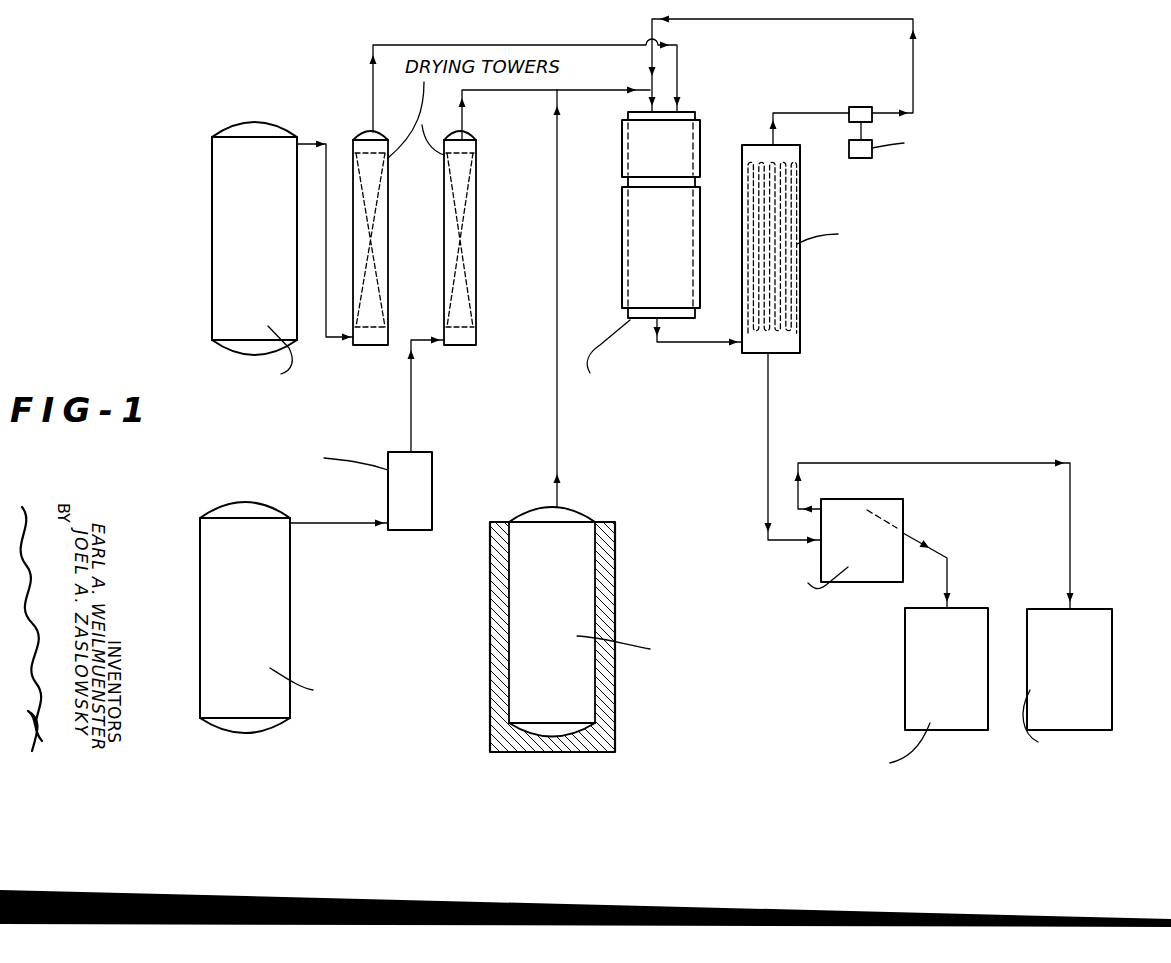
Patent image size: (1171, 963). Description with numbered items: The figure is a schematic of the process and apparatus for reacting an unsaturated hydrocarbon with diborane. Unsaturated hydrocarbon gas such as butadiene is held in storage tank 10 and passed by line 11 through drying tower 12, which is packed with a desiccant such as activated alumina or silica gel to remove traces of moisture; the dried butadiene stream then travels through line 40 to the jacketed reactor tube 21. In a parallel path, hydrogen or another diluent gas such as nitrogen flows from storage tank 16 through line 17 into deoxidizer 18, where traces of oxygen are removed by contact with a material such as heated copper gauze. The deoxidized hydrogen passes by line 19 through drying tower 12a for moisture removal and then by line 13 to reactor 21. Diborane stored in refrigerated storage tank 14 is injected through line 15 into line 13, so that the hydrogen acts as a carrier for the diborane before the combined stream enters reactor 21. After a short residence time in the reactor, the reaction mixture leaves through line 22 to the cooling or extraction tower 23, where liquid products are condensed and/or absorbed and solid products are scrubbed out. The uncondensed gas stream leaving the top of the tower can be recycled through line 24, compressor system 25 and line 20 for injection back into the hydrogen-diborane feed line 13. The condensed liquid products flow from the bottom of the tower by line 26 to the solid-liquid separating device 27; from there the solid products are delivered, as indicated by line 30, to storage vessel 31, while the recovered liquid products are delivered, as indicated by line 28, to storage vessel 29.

The storage tank 10 is at (212, 176).
The line 11 is at (313, 144).
The drying tower 12 is at (370, 345).
The drying tower 12a is at (457, 345).
The line 13 is at (523, 90).
The refrigerated storage tank 14 is at (500, 593).
The line 15 is at (557, 303).
The storage tank 16 is at (290, 628).
The line 17 is at (335, 526).
The deoxidizer 18 is at (432, 483).
The line 19 is at (411, 418).
The line 20 is at (768, 19).
The jacketed reactor tube 21 is at (694, 112).
The conduit from reactor to cooling tower 22 is at (722, 343).
The cooling or extraction tower 23 is at (800, 310).
The line 24 is at (808, 113).
The compressor system 25 is at (862, 107).
The line 26 is at (768, 420).
The solid-liquid separating device 27 is at (876, 485).
The line 28 is at (962, 463).
The storage vessel 29 is at (1112, 668).
The line 30 is at (952, 597).
The storage vessel 31 is at (905, 637).
The line 40 is at (505, 46).